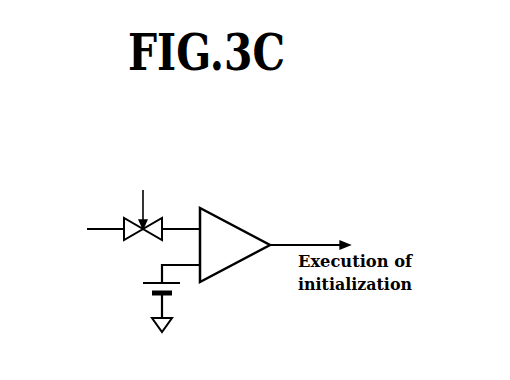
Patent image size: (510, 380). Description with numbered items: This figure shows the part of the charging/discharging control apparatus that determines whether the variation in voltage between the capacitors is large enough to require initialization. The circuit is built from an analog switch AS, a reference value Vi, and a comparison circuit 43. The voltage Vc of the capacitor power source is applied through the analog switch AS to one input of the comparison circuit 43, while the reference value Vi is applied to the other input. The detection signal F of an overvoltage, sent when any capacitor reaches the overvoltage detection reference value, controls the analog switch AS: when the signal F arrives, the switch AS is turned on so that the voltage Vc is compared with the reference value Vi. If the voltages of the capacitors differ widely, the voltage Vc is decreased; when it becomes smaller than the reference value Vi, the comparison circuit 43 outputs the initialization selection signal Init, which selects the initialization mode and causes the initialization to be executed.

The comparison circuit 43 is at (235, 225).
The analog switch AS is at (132, 243).
The detection signal of an overvoltage F is at (142, 197).
The voltage of the capacitor power source Vc is at (83, 229).
The reference value Vi is at (171, 298).
The initialization selection signal Init is at (315, 235).